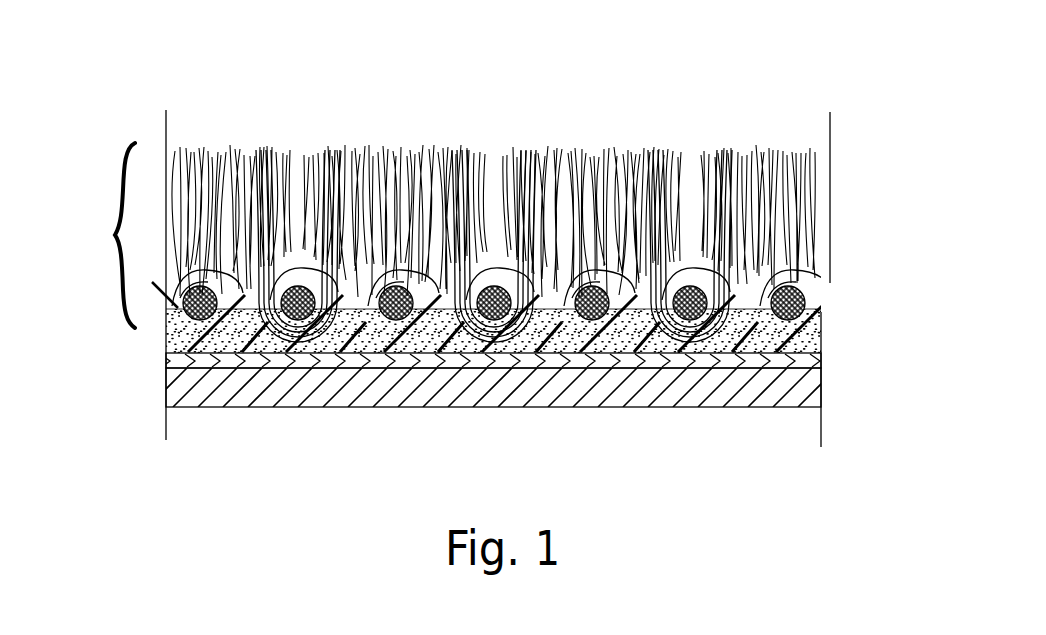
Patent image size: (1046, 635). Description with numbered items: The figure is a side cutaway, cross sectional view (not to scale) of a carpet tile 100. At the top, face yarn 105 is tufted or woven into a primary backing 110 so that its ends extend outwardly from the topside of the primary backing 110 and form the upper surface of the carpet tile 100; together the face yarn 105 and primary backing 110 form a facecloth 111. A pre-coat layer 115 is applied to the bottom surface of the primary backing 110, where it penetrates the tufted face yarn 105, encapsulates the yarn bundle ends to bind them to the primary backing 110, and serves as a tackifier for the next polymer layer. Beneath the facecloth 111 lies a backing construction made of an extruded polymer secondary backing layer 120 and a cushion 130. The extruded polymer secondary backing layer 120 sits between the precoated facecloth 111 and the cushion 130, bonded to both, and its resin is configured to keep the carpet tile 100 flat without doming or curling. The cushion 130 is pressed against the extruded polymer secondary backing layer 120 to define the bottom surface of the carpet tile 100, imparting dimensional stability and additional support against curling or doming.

The carpet tile 100 is at (607, 96).
The face yarn 105 is at (745, 200).
The primary backing 110 is at (828, 292).
The facecloth 111 is at (98, 235).
The pre-coat layer 115 is at (166, 350).
The extruded polymer secondary backing layer 120 is at (822, 358).
The cushion 130 is at (166, 388).